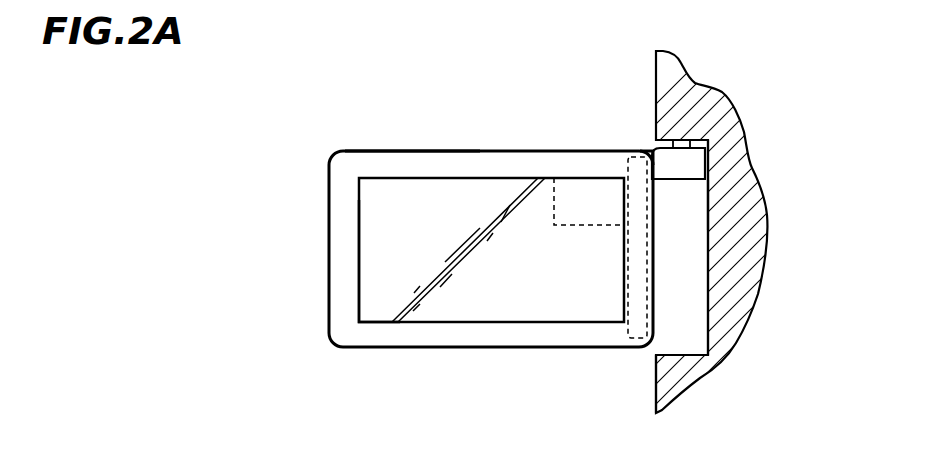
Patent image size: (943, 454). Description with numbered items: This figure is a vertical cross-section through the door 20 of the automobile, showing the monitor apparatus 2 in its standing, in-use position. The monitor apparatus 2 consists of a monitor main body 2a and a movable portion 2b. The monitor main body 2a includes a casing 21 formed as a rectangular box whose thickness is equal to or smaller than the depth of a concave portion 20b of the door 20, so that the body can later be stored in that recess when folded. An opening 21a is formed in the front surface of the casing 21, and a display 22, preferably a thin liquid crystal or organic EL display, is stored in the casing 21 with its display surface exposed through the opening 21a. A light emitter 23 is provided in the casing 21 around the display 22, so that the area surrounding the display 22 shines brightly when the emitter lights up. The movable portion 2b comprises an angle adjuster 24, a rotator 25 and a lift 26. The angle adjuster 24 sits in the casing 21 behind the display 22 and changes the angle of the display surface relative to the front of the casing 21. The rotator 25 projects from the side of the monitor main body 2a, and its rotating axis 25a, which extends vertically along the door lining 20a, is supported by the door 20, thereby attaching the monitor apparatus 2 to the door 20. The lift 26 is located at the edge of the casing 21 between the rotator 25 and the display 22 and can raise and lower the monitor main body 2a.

The monitor apparatus 2 is at (489, 223).
The monitor main body 2a is at (341, 148).
The movable portion 2b is at (623, 147).
The door 20 is at (690, 80).
The door lining 20a is at (657, 402).
The concave portion 20b is at (698, 318).
The casing 21 is at (510, 165).
The opening 21a is at (358, 270).
The display 22 is at (708, 192).
The light emitter 23 is at (403, 163).
The angle adjuster 24 is at (577, 200).
The rotator 25 is at (677, 172).
The rotating axis 25a is at (677, 142).
The lift 26 is at (632, 175).